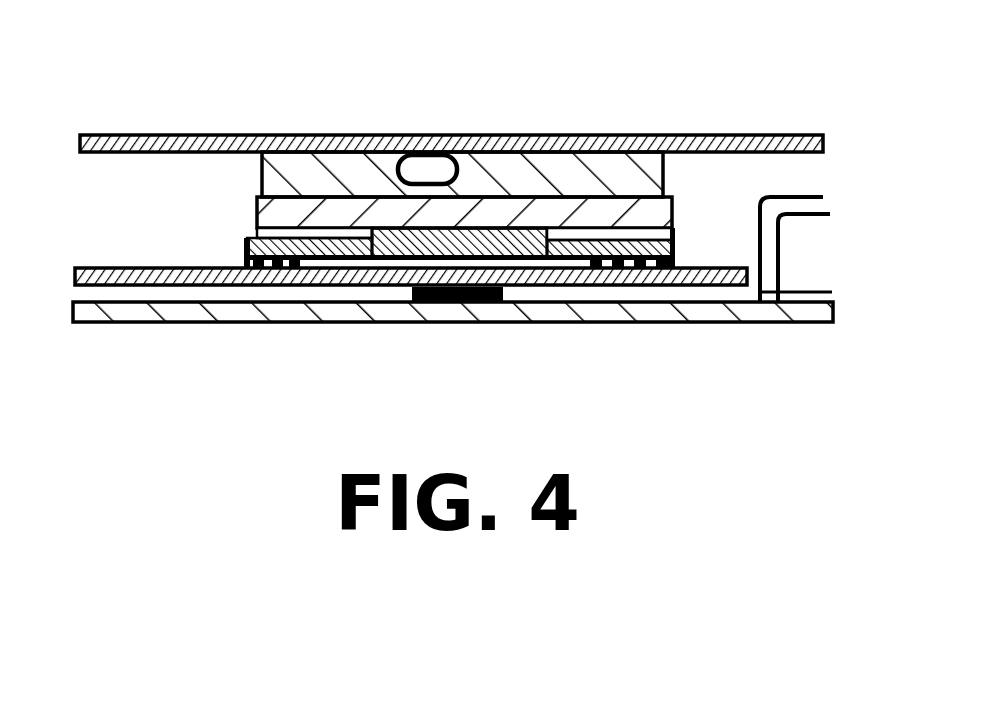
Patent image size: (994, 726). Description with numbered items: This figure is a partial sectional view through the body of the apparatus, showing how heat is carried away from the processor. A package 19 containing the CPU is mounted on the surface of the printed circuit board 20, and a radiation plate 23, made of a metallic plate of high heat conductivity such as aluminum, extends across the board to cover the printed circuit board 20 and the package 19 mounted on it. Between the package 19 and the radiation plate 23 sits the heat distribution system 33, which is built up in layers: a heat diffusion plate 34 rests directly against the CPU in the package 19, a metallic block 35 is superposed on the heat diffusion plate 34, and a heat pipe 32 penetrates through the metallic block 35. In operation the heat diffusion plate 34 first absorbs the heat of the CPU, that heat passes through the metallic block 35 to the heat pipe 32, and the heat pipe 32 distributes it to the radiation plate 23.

The package 19 is at (250, 255).
The printed circuit board 20 is at (102, 268).
The radiation plate 23 is at (770, 133).
The heat pipe 32 is at (431, 170).
The heat distribution system 33 is at (568, 110).
The heat diffusion plate 34 is at (672, 224).
The metallic block 35 is at (262, 172).